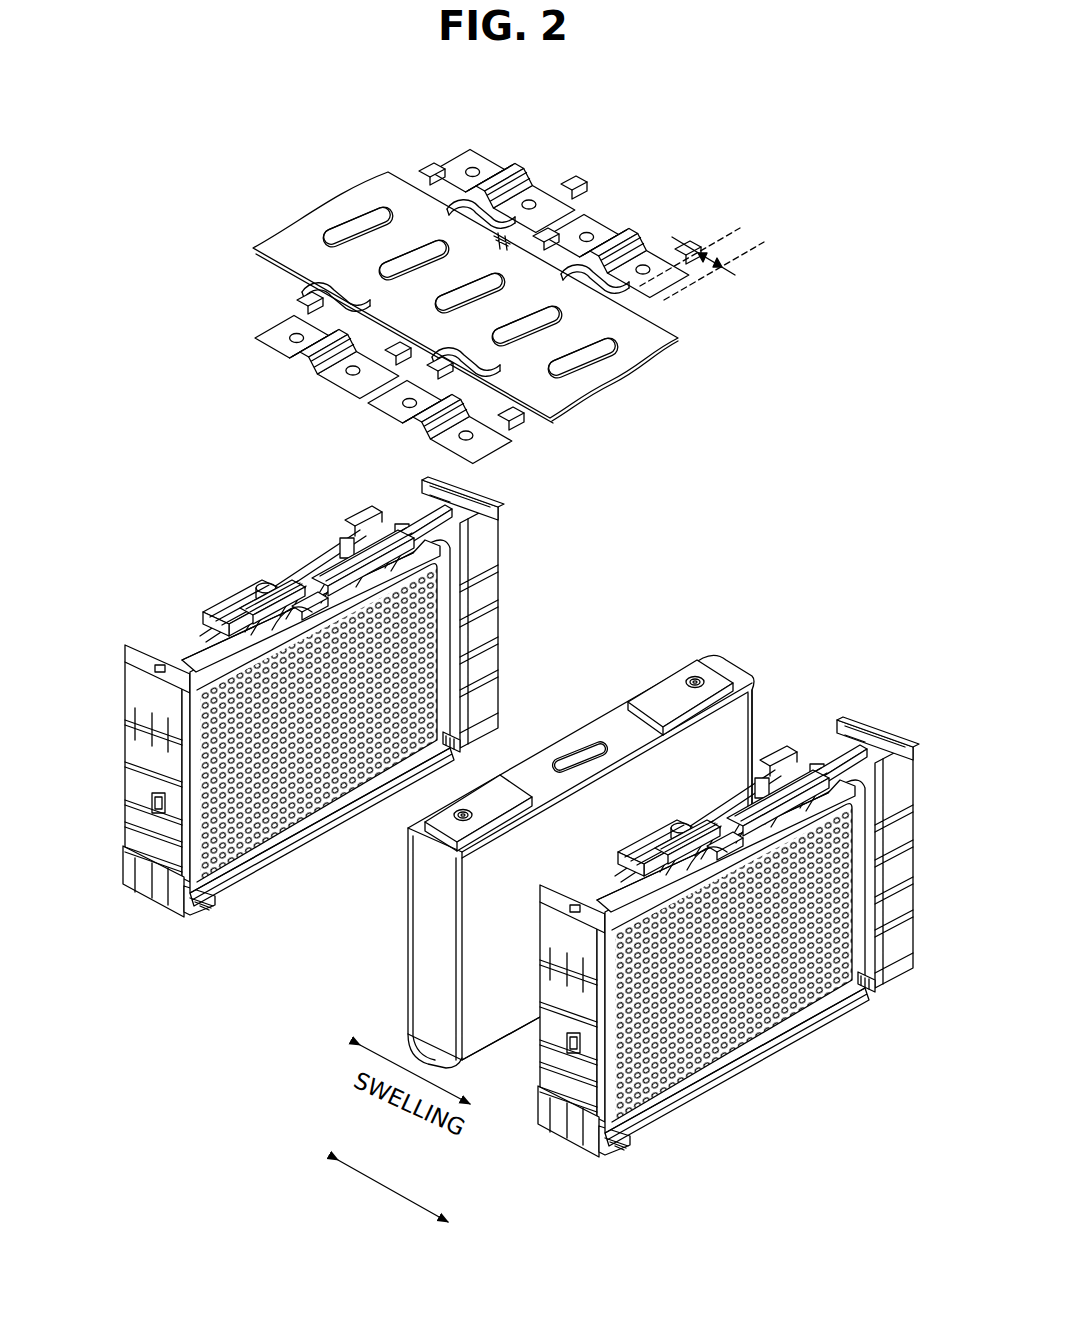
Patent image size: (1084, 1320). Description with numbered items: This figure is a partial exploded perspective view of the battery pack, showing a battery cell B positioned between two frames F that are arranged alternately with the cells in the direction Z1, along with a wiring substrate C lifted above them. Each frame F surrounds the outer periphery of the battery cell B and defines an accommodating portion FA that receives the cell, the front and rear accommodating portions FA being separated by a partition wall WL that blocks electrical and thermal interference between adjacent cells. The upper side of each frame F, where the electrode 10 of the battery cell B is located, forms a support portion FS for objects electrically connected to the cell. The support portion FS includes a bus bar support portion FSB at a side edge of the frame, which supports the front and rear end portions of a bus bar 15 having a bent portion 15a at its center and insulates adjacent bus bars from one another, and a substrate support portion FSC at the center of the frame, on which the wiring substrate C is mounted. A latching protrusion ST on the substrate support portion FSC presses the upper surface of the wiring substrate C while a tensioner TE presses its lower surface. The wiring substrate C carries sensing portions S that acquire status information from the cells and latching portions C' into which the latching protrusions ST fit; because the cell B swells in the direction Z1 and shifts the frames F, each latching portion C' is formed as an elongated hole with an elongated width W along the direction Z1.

The wiring substrate C is at (465, 282).
The sensing portion S is at (325, 287).
The latching portion C' is at (529, 184).
The bus bar 15 is at (592, 220).
The bent portion 15a is at (632, 232).
The elongated width W is at (702, 263).
The battery cell B is at (608, 828).
The electrode 10 is at (661, 692).
The frame F is at (510, 494).
The accommodating portion FA is at (112, 760).
The partition wall WL is at (242, 822).
The support portion FS is at (265, 500).
The bus bar support portion FSB is at (198, 650).
The substrate support portion FSC is at (330, 577).
The latching protrusion ST is at (267, 607).
The tensioner TE is at (310, 613).
The direction Z1 is at (393, 1191).